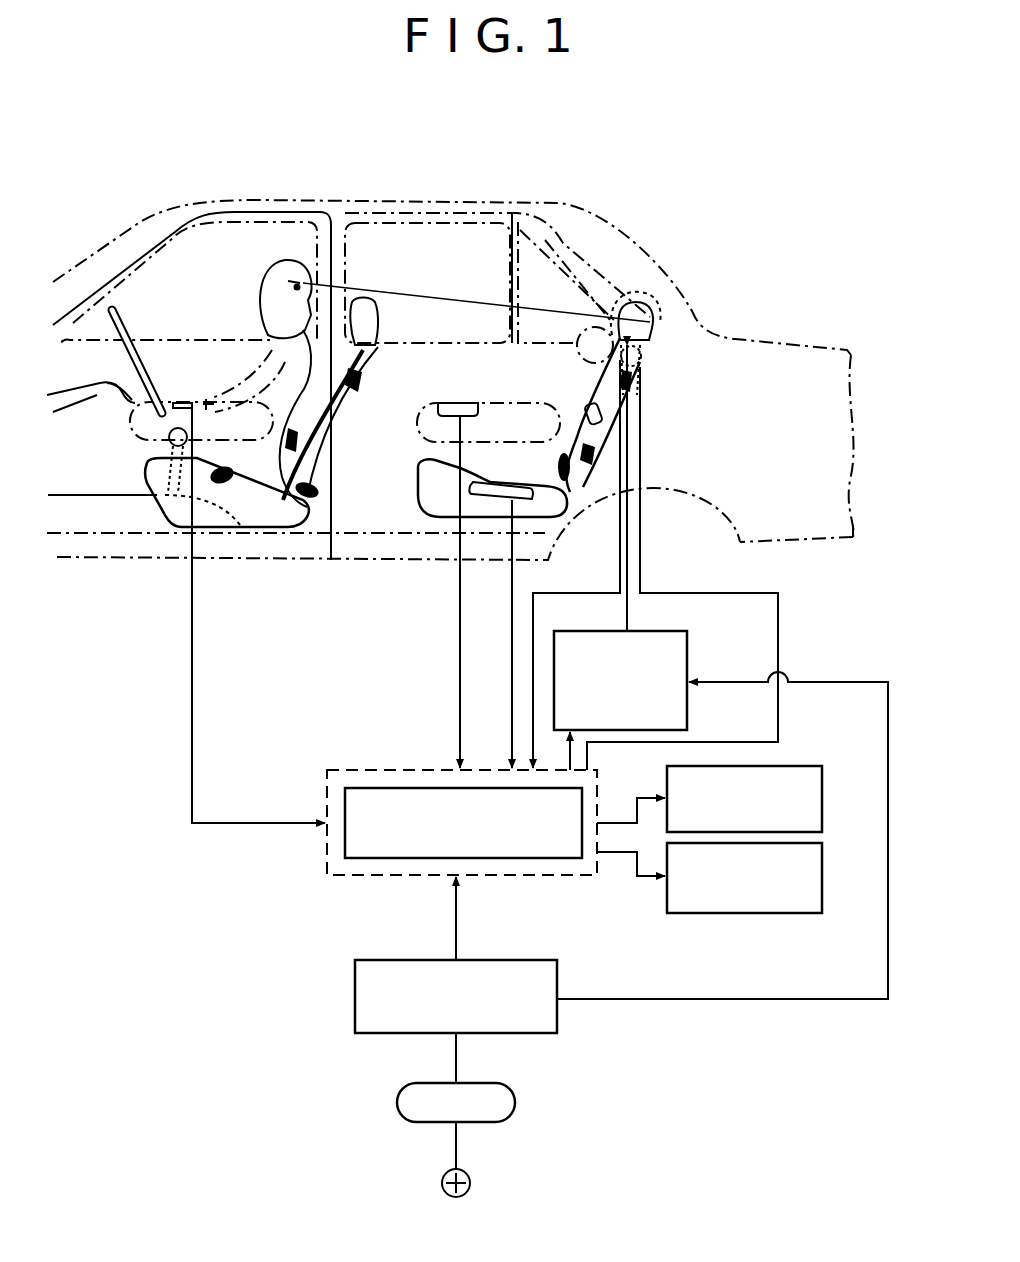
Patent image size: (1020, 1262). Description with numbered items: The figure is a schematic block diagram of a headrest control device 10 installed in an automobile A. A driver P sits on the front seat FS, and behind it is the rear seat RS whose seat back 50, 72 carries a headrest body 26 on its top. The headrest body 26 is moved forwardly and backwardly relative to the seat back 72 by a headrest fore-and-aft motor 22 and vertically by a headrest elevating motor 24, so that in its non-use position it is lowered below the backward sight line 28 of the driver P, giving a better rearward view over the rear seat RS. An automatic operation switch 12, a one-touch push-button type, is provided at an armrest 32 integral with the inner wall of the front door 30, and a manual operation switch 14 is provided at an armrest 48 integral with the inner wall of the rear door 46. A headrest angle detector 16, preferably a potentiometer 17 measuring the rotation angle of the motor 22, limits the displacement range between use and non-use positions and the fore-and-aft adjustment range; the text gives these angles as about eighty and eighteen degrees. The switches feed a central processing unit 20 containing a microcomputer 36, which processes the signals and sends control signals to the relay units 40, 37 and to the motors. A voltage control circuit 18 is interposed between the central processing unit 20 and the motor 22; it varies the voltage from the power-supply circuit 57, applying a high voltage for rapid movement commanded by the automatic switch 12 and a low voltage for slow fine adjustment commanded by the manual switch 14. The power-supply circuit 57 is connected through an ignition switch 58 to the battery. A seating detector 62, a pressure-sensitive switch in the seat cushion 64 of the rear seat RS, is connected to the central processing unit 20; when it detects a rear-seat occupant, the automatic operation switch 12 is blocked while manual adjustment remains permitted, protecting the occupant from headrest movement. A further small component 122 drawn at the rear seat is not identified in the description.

The headrest control device 10 is at (250, 1008).
The automatic operation switch 12 is at (186, 402).
The manual operation switch 14 is at (452, 403).
The headrest angle detector 16 is at (667, 323).
The potentiometer 17 is at (647, 347).
The voltage control circuit 18 is at (684, 641).
The central processing unit 20 is at (337, 763).
The headrest fore-and-aft motor 22 is at (643, 367).
The headrest elevating motor 24 is at (654, 300).
The headrest body 26 is at (622, 291).
The backward sight line 28 is at (469, 304).
The front door 30 is at (170, 338).
The armrest 32 is at (127, 420).
The microcomputer 36 is at (378, 787).
The relay unit 37 is at (823, 847).
The relay unit 40 is at (806, 765).
The rear door 46 is at (400, 341).
The armrest 48 is at (513, 403).
The seat back 50 is at (556, 392).
The power-supply circuit 57 is at (548, 960).
The ignition switch 58 is at (503, 1087).
The seating detector 62 is at (485, 481).
The rear seat cushion 64 is at (423, 506).
The seat back 72 is at (590, 483).
The buckle switch 122 is at (587, 405).
The driver P is at (290, 262).
The automobile A is at (605, 203).
The front seat FS is at (270, 413).
The rear seat RS is at (607, 442).